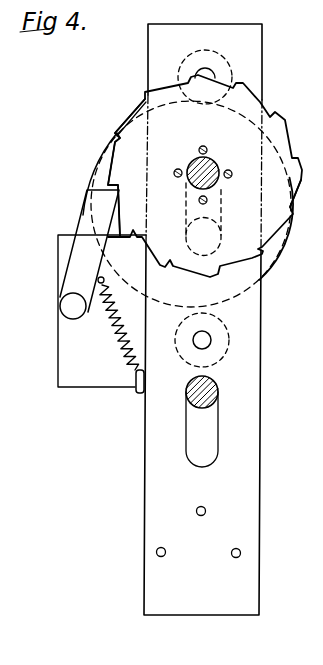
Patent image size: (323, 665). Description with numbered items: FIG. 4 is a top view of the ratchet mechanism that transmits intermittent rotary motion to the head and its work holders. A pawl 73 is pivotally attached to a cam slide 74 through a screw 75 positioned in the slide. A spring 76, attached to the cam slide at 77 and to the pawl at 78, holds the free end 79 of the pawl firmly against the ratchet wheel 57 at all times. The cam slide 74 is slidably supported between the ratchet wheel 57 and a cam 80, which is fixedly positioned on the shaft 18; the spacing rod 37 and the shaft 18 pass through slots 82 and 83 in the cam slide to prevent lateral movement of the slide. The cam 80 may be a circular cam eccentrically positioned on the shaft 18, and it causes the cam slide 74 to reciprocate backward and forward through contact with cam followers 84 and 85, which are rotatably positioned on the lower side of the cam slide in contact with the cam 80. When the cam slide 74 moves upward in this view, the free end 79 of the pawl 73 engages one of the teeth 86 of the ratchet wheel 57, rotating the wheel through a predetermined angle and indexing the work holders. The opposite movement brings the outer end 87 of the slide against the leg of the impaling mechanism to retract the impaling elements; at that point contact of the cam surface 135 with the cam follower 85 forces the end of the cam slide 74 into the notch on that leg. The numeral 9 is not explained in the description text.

The outer end 87 is at (160, 605).
The cam follower 84 is at (228, 62).
The ratchet wheel 57 is at (284, 121).
The cam tooth 9 is at (303, 194).
The teeth 86 is at (114, 134).
The shaft 18 is at (193, 164).
The slot 83 is at (224, 226).
The free end 79 is at (97, 196).
The pawl 73 is at (88, 250).
The spring attachment point on pawl 78 is at (99, 279).
The screw 75 is at (66, 307).
The spring 76 is at (113, 326).
The spring attachment point on cam slide 77 is at (134, 389).
The cam surface 135 is at (263, 307).
The cam 80 is at (288, 243).
The cam slide 74 is at (248, 328).
The cam follower 85 is at (229, 352).
The slot 82 is at (218, 431).
The spacing rod 37 is at (219, 392).